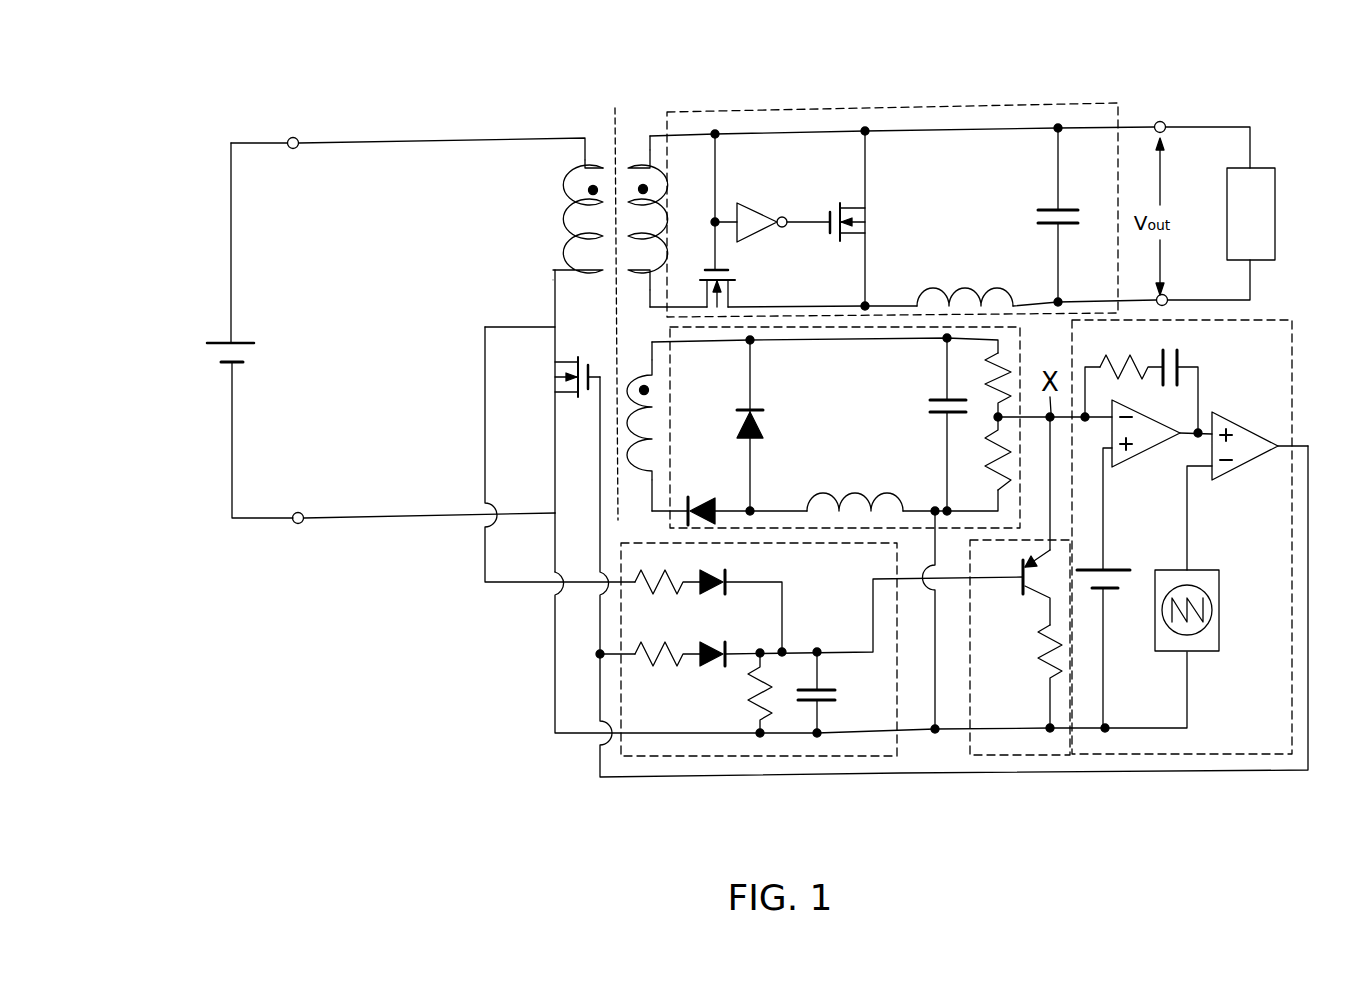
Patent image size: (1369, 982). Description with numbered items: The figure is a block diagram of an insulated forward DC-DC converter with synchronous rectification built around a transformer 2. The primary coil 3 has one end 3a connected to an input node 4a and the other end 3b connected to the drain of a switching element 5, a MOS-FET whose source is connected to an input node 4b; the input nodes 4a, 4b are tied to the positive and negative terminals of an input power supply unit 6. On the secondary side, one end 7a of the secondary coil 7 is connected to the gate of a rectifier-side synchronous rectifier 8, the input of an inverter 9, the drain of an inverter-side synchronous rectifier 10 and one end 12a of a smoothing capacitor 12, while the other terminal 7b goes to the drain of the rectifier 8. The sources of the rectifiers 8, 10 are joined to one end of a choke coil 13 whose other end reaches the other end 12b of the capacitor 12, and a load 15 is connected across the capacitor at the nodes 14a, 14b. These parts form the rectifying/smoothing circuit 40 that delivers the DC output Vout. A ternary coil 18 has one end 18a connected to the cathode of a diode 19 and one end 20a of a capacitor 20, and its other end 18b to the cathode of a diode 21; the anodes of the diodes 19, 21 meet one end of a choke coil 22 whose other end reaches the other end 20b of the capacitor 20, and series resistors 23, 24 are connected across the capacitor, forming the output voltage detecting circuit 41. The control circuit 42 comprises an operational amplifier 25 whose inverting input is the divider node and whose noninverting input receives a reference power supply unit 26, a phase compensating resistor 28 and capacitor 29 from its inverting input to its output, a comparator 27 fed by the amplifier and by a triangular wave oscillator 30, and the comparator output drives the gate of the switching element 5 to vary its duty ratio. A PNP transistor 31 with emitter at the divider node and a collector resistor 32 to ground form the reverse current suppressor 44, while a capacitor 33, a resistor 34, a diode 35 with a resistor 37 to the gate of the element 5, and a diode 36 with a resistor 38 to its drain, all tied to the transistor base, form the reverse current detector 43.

The transformer 2 is at (611, 296).
The primary coil 3 is at (571, 219).
The one end of primary coil 3a is at (556, 176).
The other end of primary coil 3b is at (522, 259).
The input node 4a is at (302, 114).
The input node 4b is at (310, 548).
The switching element 5 is at (552, 380).
The input power supply unit 6 is at (224, 318).
The secondary coil 7 is at (661, 221).
The one end of secondary coil 7a is at (679, 173).
The other terminal of secondary coil 7b is at (680, 266).
The rectifier-side synchronous rectifier 8 is at (739, 288).
The inverter 9 is at (772, 202).
The inverter-side synchronous rectifier 10 is at (827, 239).
The smoothing capacitor 12 is at (1052, 215).
The one end of smoothing capacitor 12a is at (1077, 181).
The other end of smoothing capacitor 12b is at (1077, 250).
The choke coil 13 is at (965, 269).
The node 14a is at (1176, 96).
The node 14b is at (1189, 277).
The load 15 is at (1271, 206).
The ternary coil 18 is at (672, 426).
The one end of ternary coil 18a is at (692, 362).
The other end of ternary coil 18b is at (690, 452).
The diode 19 is at (778, 425).
The capacitor 20 is at (913, 424).
The one end of capacitor 20a is at (914, 371).
The other end of capacitor 20b is at (914, 427).
The diode 21 is at (714, 487).
The choke coil 22 is at (855, 474).
The resistor 23 is at (1022, 374).
The resistor 24 is at (982, 453).
The operational amplifier 25 is at (1157, 485).
The reference power supply unit 26 is at (1119, 624).
The comparator 27 is at (1247, 472).
The resistor 28 is at (1132, 351).
The capacitor 29 is at (1201, 381).
The triangular wave oscillator 30 is at (1212, 603).
The PNP transistor 31 is at (1013, 588).
The resistor 32 is at (1021, 676).
The capacitor 33 is at (838, 692).
The resistor 34 is at (733, 693).
The diode 35 is at (861, 621).
The diode 36 is at (741, 598).
The resistor 37 is at (667, 683).
The resistor 38 is at (667, 602).
The rectifying/smoothing circuit 40 is at (870, 108).
The output voltage detecting circuit 41 is at (955, 530).
The control circuit 42 is at (1293, 382).
The reverse current detector 43 is at (737, 760).
The reverse current suppressor 44 is at (1020, 757).